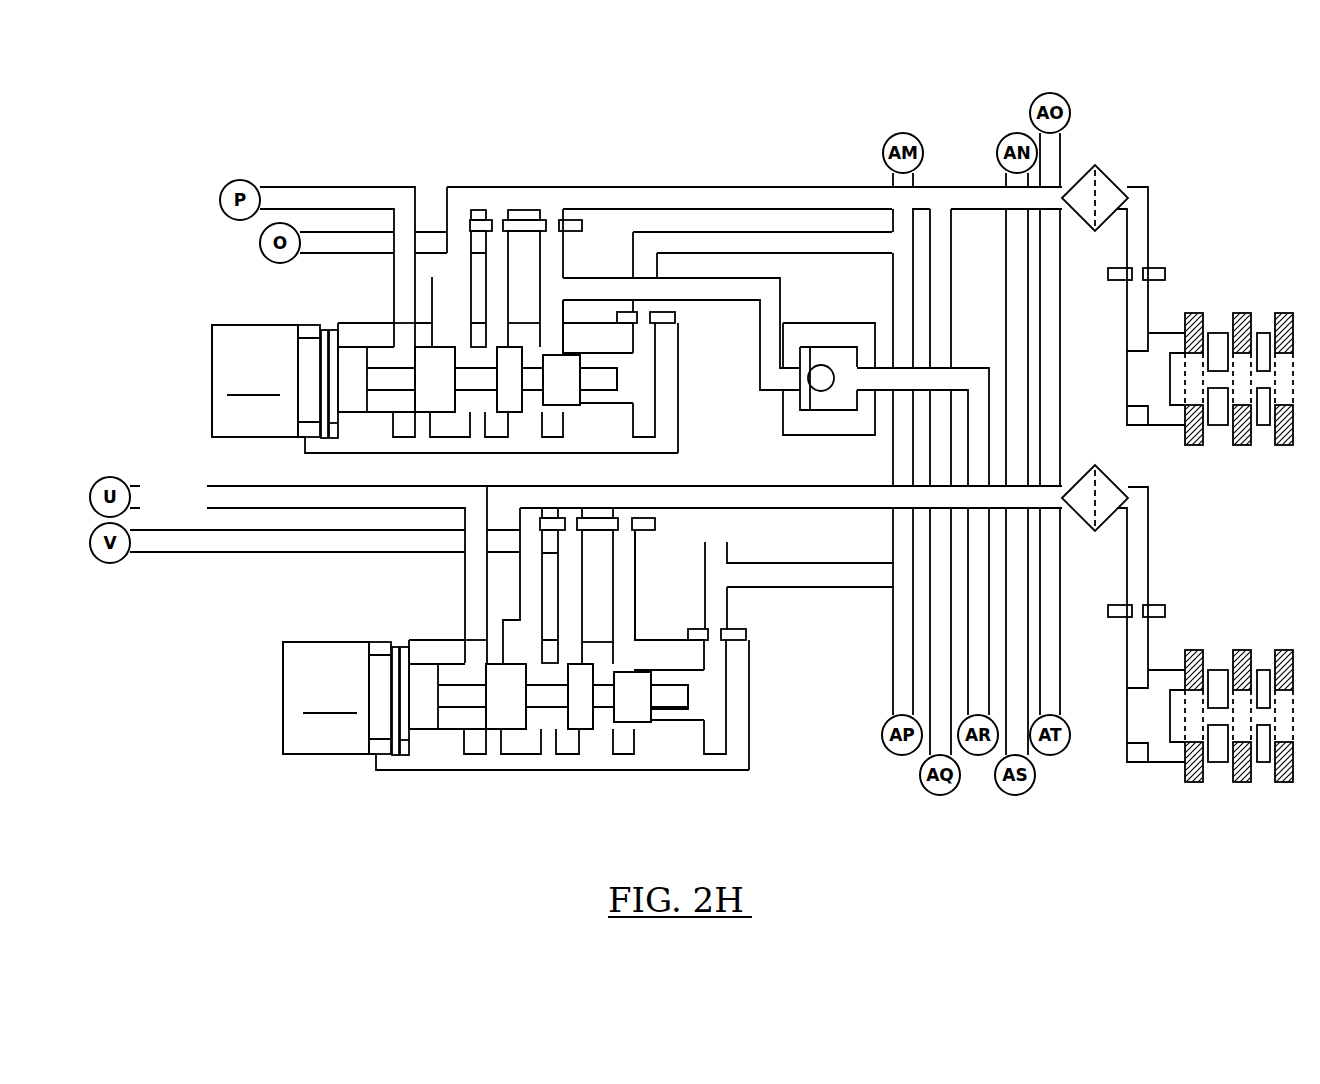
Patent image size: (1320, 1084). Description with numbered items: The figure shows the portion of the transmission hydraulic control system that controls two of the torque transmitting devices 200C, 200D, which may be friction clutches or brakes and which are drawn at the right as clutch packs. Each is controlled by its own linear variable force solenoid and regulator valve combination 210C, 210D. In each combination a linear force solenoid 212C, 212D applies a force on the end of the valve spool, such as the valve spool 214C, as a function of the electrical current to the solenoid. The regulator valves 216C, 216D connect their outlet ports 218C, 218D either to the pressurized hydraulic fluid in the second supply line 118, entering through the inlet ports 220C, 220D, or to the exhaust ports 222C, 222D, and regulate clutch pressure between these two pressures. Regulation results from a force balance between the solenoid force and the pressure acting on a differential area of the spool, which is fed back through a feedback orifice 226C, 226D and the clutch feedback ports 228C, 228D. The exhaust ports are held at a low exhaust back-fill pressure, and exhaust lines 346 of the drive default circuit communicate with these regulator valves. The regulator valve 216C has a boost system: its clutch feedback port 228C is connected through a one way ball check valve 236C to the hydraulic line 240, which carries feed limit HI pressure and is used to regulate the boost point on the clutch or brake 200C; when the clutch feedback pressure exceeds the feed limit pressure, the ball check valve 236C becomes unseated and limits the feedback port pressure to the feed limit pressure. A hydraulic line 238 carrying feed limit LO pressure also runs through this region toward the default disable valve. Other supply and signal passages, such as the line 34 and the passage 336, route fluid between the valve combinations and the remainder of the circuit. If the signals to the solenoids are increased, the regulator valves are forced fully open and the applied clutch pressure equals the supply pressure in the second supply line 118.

The second supply line 118 is at (306, 200).
The fluid line 34 is at (337, 240).
The exhaust lines 346 is at (212, 540).
The outlet port 218C is at (460, 268).
The outlet port 218D is at (532, 515).
The feedback orifice 226C is at (583, 224).
The feedback orifice 226D is at (597, 522).
The clutch feedback port 228C is at (560, 320).
The clutch feedback port 228D is at (625, 640).
The exhaust port 222C is at (493, 322).
The exhaust port 222D is at (568, 657).
The inlet port 220C is at (400, 322).
The inlet port 220D is at (475, 642).
The linear force solenoid 212C is at (255, 381).
The linear force solenoid 212D is at (326, 698).
The variable force solenoid and regulator valve combination 210C is at (686, 442).
The variable force solenoid and regulator valve combination 210D is at (564, 794).
The regulator valve 216C is at (693, 368).
The regulator valve 216D is at (776, 670).
The valve spool 214C is at (605, 380).
The one way ball check valve 236C is at (840, 358).
The hydraulic line 240 is at (980, 648).
The hydraulic line 238 is at (1018, 668).
The fluid passage 336 is at (1052, 425).
The torque transmitting device 200C is at (1239, 301).
The torque transmitting device 200D is at (1239, 626).